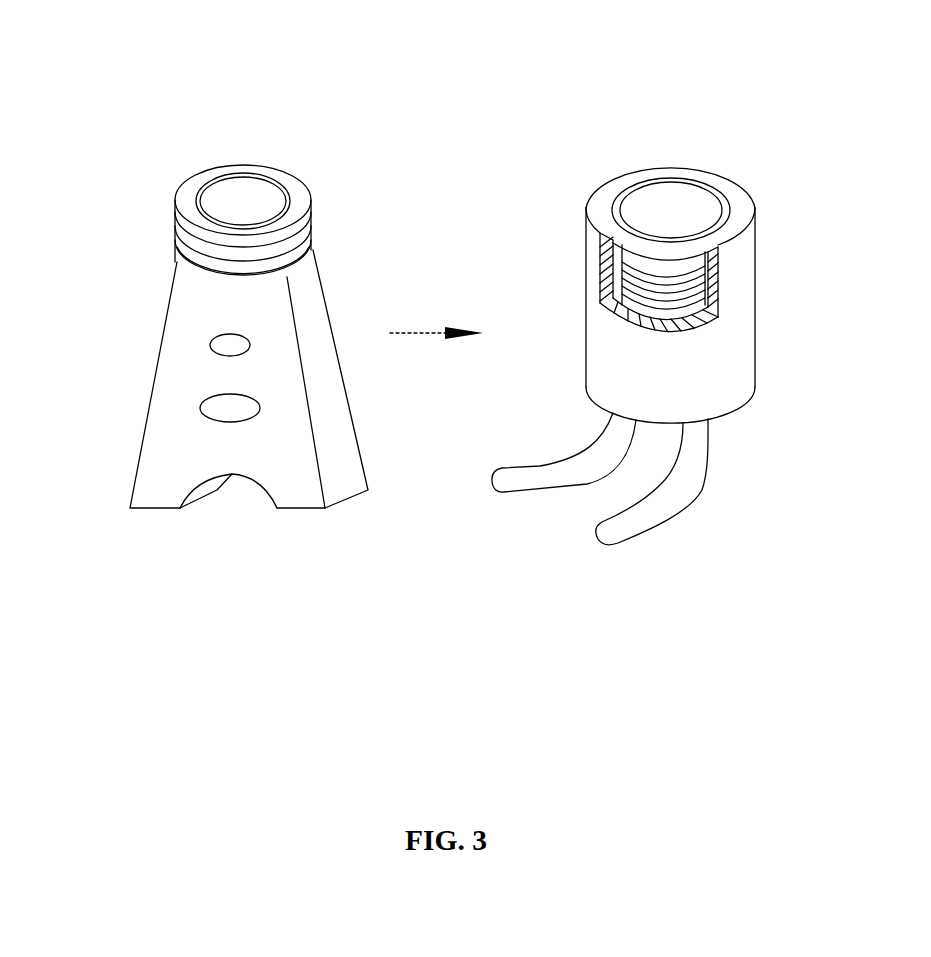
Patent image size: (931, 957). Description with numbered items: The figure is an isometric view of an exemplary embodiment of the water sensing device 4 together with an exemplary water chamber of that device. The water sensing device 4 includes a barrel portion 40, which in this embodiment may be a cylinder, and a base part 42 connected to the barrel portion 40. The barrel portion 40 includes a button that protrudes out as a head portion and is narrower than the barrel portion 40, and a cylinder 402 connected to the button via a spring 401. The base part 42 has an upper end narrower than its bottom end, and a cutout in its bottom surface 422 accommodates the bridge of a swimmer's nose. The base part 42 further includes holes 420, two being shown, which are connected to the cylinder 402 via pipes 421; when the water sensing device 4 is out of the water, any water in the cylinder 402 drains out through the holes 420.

The water sensing device 4 is at (292, 84).
The barrel portion 40 is at (300, 243).
The base part 42 is at (195, 315).
The holes 420 is at (227, 408).
The bottom surface 422 is at (247, 480).
The spring 401 is at (615, 273).
The cylinder 402 is at (740, 285).
The pipes 421 is at (575, 472).